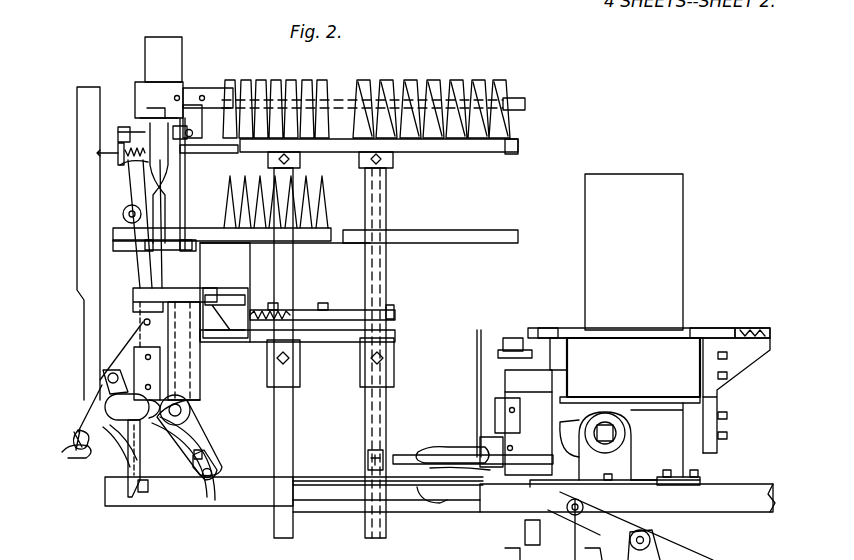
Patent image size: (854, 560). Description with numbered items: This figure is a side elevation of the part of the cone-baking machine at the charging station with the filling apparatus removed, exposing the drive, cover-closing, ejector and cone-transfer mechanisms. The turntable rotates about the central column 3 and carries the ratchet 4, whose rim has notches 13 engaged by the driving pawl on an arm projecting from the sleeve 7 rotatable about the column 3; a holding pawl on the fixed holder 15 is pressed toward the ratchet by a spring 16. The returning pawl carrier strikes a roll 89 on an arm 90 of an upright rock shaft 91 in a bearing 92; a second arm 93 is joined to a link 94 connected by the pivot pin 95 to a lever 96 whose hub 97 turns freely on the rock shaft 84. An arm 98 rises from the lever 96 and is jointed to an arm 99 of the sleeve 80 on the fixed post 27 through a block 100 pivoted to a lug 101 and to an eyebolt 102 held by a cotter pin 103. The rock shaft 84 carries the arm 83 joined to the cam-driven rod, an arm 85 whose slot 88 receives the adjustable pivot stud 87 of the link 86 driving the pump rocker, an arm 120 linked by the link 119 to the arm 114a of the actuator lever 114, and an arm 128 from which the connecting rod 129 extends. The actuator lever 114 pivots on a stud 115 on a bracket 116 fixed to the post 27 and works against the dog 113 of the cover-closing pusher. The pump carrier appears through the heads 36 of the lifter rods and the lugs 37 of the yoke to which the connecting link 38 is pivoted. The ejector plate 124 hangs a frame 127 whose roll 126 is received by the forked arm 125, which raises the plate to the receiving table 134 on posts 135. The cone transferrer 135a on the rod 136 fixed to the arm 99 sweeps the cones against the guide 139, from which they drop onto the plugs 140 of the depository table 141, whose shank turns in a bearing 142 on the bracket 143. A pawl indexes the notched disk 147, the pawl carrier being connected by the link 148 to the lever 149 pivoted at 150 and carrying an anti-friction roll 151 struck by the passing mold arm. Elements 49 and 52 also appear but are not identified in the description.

The fixed post 27 is at (178, 38).
The sleeve 80 is at (160, 82).
The lug 101 is at (190, 105).
The arm 99 is at (206, 88).
The eyebolt 102 is at (152, 95).
The cotter pin 103 is at (150, 113).
The guide 139 is at (290, 98).
The rod 136 is at (343, 100).
The cone transferrer 135a is at (474, 128).
The receiving table 134 is at (436, 150).
The dog 113 is at (97, 155).
The actuator lever 114 is at (130, 170).
The stud 115 is at (124, 200).
The bracket 116 is at (122, 214).
The arm 98 is at (172, 182).
The block 100 is at (221, 157).
The plugs 140 is at (310, 208).
The ejector plate 124 is at (446, 230).
The arm of actuator lever 114a is at (138, 268).
The connecting rod 86 is at (82, 300).
The depository table 141 is at (225, 292).
The rotating disk 147 is at (214, 283).
The posts 135 is at (300, 264).
The lever 149 is at (330, 300).
The anti-friction roll 151 is at (396, 311).
The column 3 is at (668, 275).
The roll 89 is at (500, 340).
The ratchet 4 is at (528, 334).
The notches 13 is at (702, 328).
The spring 16 is at (757, 328).
The fixed holder 15 is at (764, 346).
The sleeve 7 is at (630, 370).
The link 119 is at (127, 343).
The arm 120 is at (82, 362).
The pivot stud 87 is at (95, 402).
The bearing 142 is at (200, 360).
The link 148 is at (202, 386).
The rock shaft 84 is at (192, 410).
The arm 128 is at (202, 438).
The arm 85 is at (64, 434).
The slot 88 is at (72, 456).
The hub 97 is at (103, 427).
The arm 83 is at (130, 440).
The lever 96 is at (138, 492).
The pivot pin 95 is at (198, 478).
The connecting rod 129 is at (254, 492).
The pivot 150 is at (302, 368).
The bracket 143 is at (308, 342).
The link 94 is at (326, 477).
The frame 127 is at (368, 455).
The forked arm 125 is at (420, 447).
The arm 90 is at (525, 373).
The upright rock shaft 91 is at (525, 392).
The bearing 92 is at (525, 420).
The roll 126 is at (418, 510).
The arm 93 is at (584, 492).
The heads 36 is at (523, 533).
The connecting link 38 is at (615, 466).
The link 49 is at (498, 551).
The lugs 37 is at (597, 551).
The lever 52 is at (638, 526).